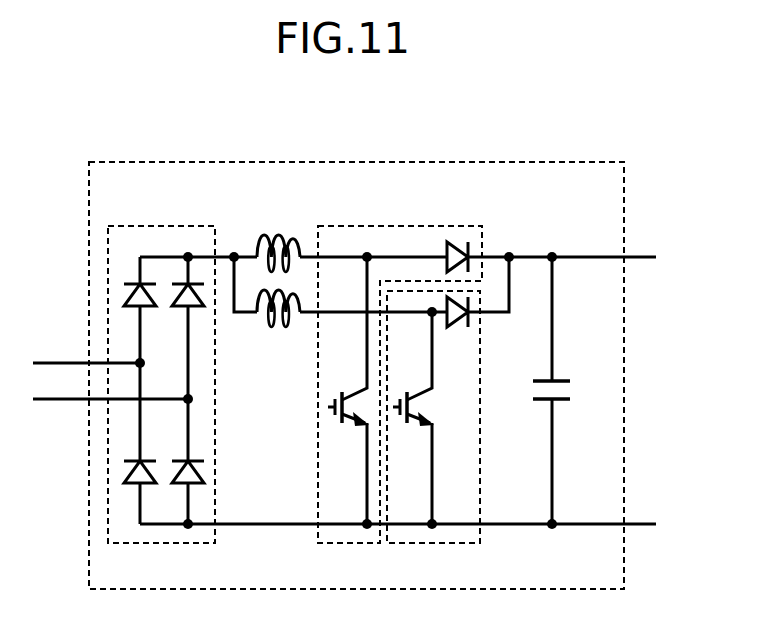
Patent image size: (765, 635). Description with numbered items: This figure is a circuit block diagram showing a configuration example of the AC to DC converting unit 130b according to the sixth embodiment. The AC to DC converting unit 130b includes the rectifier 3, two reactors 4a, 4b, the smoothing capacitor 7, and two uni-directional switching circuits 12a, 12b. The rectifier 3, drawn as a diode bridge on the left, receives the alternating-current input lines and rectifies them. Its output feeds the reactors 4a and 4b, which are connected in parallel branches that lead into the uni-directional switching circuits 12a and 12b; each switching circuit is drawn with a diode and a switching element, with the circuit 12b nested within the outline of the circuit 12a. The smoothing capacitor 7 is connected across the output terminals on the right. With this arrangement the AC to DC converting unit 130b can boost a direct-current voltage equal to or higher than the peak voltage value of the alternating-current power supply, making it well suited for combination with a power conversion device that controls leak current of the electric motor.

The AC to DC converting unit 130b is at (565, 145).
The rectifier 3 is at (163, 231).
The reactor 4a is at (277, 232).
The reactor 4b is at (272, 328).
The uni-directional switching circuit 12a is at (361, 231).
The uni-directional switching circuit 12b is at (430, 547).
The smoothing capacitor 7 is at (559, 381).